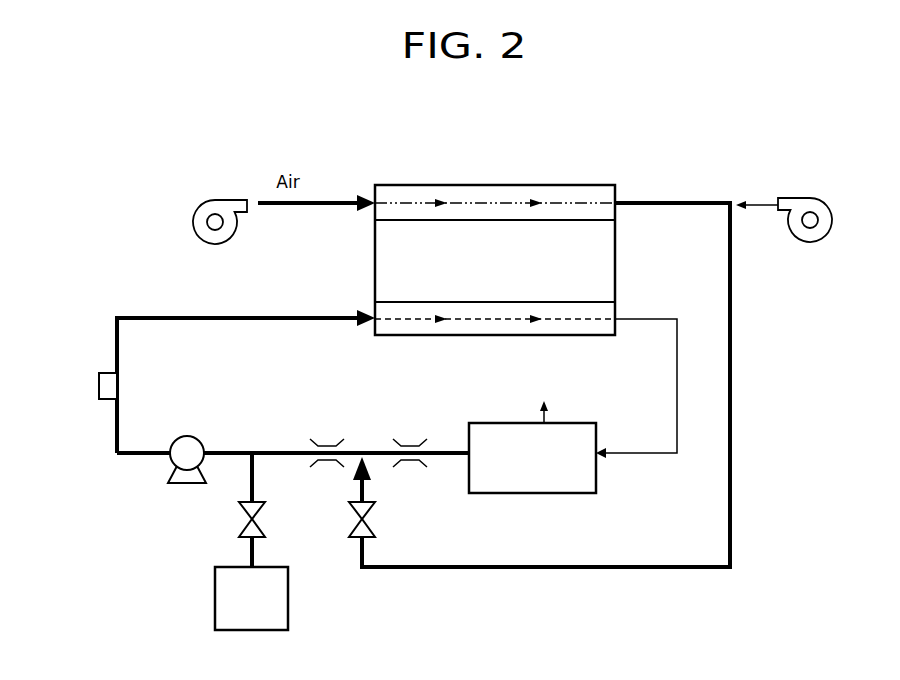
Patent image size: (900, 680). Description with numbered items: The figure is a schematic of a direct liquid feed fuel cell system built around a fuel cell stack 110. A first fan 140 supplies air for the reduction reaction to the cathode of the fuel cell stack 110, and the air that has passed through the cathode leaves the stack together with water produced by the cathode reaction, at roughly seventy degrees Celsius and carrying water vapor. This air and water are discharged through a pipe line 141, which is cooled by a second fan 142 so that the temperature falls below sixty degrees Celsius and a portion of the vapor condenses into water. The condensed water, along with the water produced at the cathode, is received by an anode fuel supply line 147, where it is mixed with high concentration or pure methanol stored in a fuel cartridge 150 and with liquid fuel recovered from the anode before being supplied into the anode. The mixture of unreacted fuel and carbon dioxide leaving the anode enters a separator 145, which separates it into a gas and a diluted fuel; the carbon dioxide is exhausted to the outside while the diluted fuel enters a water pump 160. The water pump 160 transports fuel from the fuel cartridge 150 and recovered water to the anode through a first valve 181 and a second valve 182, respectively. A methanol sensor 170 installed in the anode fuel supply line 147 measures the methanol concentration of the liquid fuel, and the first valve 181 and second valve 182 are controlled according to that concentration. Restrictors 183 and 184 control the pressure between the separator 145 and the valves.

The fuel cell stack 110 is at (510, 176).
The first fan 140 is at (198, 203).
The pipe line 141 is at (712, 198).
The second fan 142 is at (828, 206).
The separator 145 is at (530, 493).
The anode fuel supply line 147 is at (365, 451).
The fuel cartridge 150 is at (288, 600).
The water pump 160 is at (199, 441).
The methanol sensor 170 is at (99, 386).
The first valve 181 is at (239, 528).
The second valve 182 is at (372, 525).
The restrictor 183 is at (322, 440).
The restrictor 184 is at (406, 440).